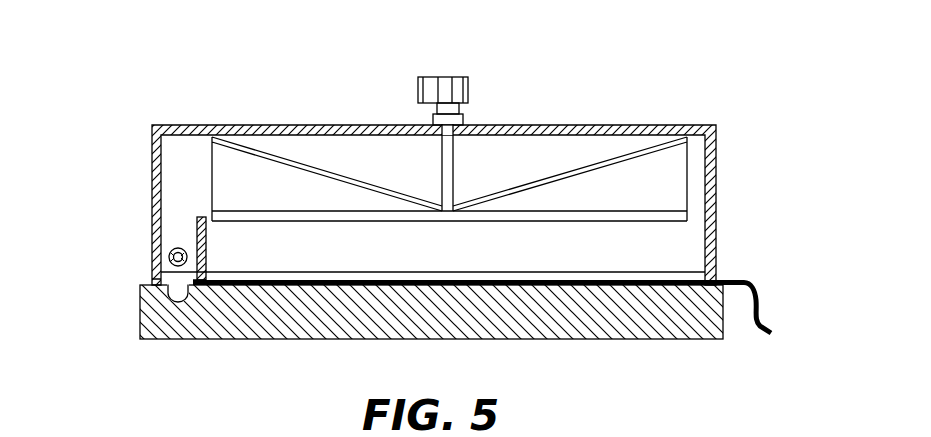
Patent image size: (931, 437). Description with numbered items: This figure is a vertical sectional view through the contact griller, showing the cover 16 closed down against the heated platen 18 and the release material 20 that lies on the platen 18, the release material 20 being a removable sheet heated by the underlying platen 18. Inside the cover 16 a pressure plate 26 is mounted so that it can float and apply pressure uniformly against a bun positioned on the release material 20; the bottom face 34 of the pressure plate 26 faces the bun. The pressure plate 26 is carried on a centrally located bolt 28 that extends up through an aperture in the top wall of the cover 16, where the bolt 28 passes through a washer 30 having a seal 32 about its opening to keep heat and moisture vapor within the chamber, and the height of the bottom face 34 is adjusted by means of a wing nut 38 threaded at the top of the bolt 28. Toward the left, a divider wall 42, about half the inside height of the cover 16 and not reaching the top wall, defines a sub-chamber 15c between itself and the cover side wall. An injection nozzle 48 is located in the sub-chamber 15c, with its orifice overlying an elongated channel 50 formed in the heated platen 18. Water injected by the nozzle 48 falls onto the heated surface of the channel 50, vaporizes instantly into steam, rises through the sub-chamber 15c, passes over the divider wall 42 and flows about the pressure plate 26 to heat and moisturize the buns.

The sub-chamber 15c is at (176, 222).
The cover 16 is at (614, 125).
The platen 18 is at (536, 340).
The release material 20 is at (745, 278).
The pressure plate 26 is at (340, 155).
The threaded shaft 28 is at (470, 104).
The washer 30 is at (463, 121).
The seal 32 is at (158, 279).
The bottom face 34 is at (448, 222).
The wing nut 38 is at (458, 77).
The divider wall 42 is at (208, 252).
The injection nozzle 48 is at (178, 248).
The channel 50 is at (178, 300).